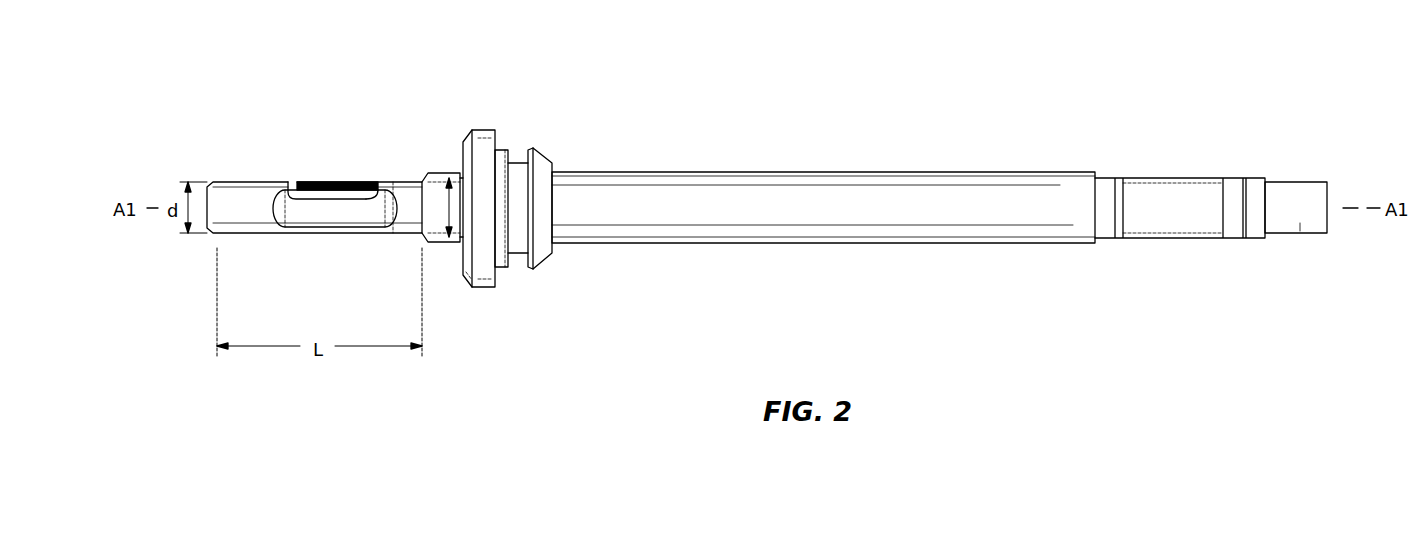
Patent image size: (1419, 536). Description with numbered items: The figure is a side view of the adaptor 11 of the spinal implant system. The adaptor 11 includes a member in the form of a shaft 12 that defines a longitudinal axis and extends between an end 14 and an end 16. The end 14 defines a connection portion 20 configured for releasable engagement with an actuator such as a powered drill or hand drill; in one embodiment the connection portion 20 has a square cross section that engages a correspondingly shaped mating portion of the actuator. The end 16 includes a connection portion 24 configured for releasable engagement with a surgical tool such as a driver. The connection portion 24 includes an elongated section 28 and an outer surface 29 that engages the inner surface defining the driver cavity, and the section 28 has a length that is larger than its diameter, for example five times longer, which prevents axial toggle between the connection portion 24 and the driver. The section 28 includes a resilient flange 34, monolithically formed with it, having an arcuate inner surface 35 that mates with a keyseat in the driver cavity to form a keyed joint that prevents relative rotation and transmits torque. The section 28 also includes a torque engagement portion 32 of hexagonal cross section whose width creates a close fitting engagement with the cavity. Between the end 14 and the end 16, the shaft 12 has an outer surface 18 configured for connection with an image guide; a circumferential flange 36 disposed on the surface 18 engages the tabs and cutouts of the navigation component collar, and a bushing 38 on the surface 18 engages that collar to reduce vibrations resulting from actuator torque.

The adaptor 11 is at (1088, 50).
The shaft 12 is at (864, 126).
The end 14 is at (1293, 182).
The end 16 is at (218, 181).
The outer surface 18 is at (928, 172).
The connection portion 20 is at (1298, 225).
The connection portion 24 is at (278, 161).
The elongated section 28 is at (305, 250).
The outer surface 29 is at (393, 181).
The torque engagement portion 32 is at (442, 172).
The resilient flange 34 is at (337, 181).
The inner surface 35 is at (338, 200).
The circumferential flange 36 is at (507, 137).
The bushing 38 is at (543, 260).